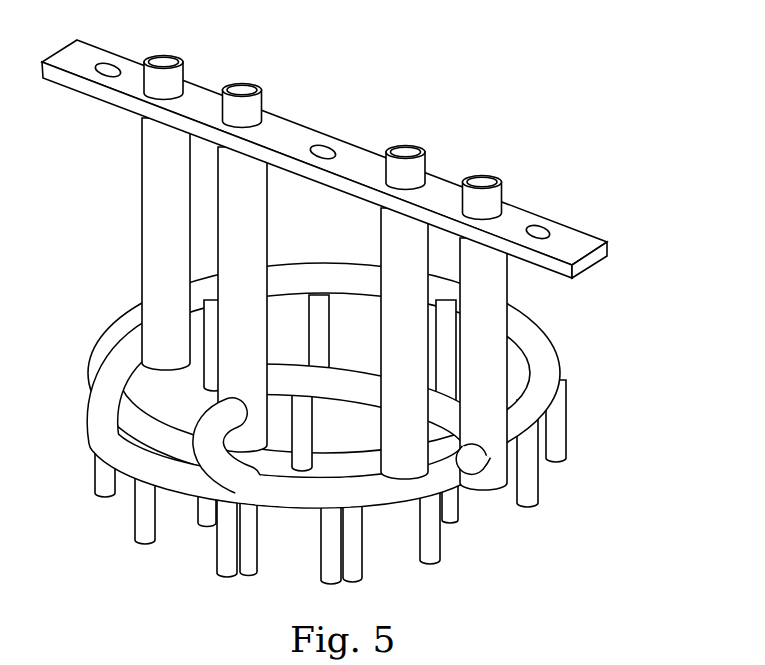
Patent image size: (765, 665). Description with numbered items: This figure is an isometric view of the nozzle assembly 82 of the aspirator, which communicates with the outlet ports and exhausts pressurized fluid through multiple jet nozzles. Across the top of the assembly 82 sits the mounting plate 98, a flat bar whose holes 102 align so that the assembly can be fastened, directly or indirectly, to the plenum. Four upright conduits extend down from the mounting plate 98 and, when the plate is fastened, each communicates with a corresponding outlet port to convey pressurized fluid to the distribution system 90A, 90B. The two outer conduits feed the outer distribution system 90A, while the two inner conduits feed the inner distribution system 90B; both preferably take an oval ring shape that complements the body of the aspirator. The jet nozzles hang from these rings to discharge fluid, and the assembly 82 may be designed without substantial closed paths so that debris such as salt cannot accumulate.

The nozzle assembly 82 is at (363, 302).
The outer distribution system 90A is at (553, 369).
The inner distribution system 90B is at (200, 433).
The mounting plate 98 is at (322, 124).
The holes 102 is at (168, 52).